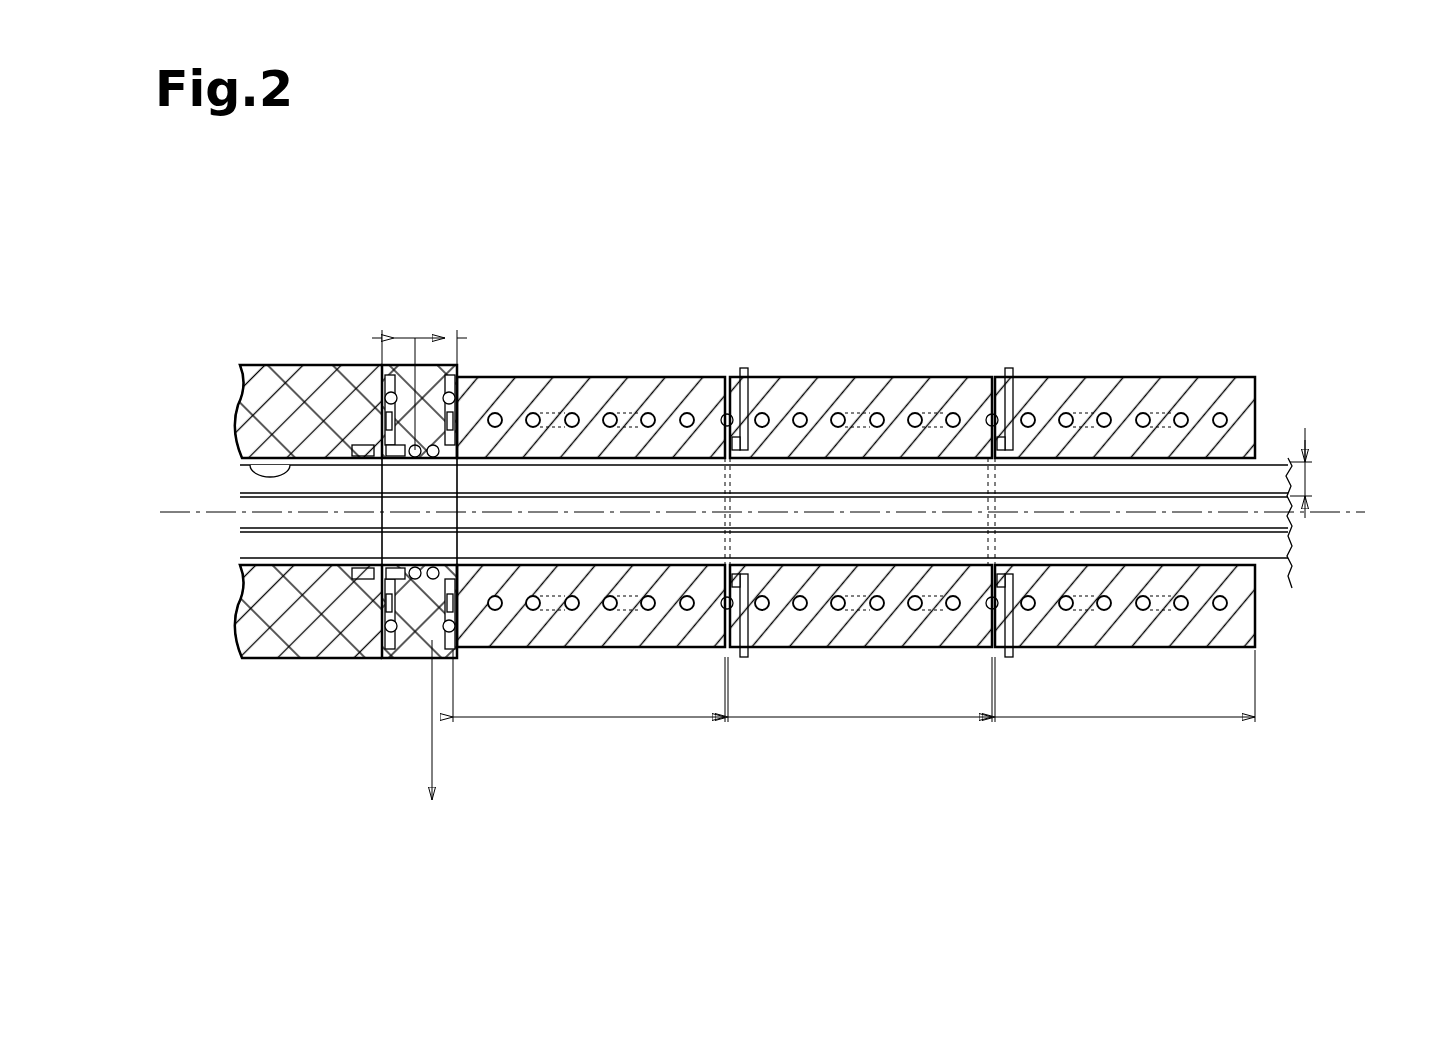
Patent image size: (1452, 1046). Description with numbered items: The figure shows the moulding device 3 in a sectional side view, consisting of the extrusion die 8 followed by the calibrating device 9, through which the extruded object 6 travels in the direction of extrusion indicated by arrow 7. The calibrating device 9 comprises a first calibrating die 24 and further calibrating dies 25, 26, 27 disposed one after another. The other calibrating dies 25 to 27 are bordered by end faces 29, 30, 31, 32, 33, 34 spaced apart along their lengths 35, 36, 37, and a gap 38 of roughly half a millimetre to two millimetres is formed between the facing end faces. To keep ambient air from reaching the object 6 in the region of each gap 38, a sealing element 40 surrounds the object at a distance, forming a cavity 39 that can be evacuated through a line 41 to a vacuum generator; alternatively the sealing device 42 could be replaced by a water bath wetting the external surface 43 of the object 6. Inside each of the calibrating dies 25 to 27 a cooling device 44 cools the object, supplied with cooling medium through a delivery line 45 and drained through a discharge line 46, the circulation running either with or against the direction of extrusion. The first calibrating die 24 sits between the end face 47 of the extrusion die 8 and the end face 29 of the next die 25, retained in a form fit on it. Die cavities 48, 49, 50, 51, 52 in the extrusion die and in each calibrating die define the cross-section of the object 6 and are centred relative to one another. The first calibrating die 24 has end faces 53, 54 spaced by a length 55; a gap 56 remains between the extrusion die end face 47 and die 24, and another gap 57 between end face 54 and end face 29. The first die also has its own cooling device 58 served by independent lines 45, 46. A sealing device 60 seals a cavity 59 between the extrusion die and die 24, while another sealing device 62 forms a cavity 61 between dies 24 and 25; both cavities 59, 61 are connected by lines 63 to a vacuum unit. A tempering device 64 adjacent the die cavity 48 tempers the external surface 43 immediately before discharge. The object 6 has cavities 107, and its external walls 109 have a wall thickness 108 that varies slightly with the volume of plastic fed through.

The moulding device 3 is at (680, 212).
The object 6 is at (1290, 460).
The direction of extrusion arrow 7 is at (1358, 272).
The extrusion die 8 is at (272, 390).
The calibrating device 9 is at (707, 290).
The first calibrating die 24 is at (416, 338).
The calibrating die 25 is at (632, 375).
The calibrating die 26 is at (875, 375).
The calibrating die 27 is at (1150, 377).
The end face 29 is at (470, 385).
The end face 30 is at (727, 375).
The end face 31 is at (729, 375).
The end face 32 is at (990, 375).
The end face 33 is at (1008, 375).
The end face 34 is at (1262, 380).
The length 35 is at (610, 720).
The length 36 is at (870, 720).
The length 37 is at (1160, 720).
The gap 38 is at (725, 660).
The cavity 39 is at (678, 377).
The sealing element 40 is at (757, 375).
The line 41 is at (803, 376).
The sealing device 42 is at (735, 655).
The external surface 43 is at (1305, 430).
The cooling device 44 is at (560, 377).
The delivery line 45 is at (405, 460).
The discharge line 46 is at (688, 377).
The end face 47 is at (397, 660).
The die cavity 48 is at (255, 457).
The die cavity 49 is at (400, 488).
The die cavity 50 is at (550, 485).
The die cavity 51 is at (850, 482).
The die cavity 52 is at (1242, 375).
The end face 53 is at (392, 445).
The end face 54 is at (462, 375).
The length 55 is at (387, 392).
The gap 56 is at (350, 643).
The gap 57 is at (458, 605).
The cooling device 58 is at (432, 778).
The cavity 59 is at (395, 648).
The sealing device 60 is at (403, 645).
The cavity 61 is at (457, 440).
The sealing device 62 is at (435, 645).
The line 63 is at (374, 342).
The tempering device 64 is at (330, 572).
The cavity 107 is at (1297, 545).
The wall thickness 108 is at (1310, 500).
The external wall 109 is at (1268, 570).